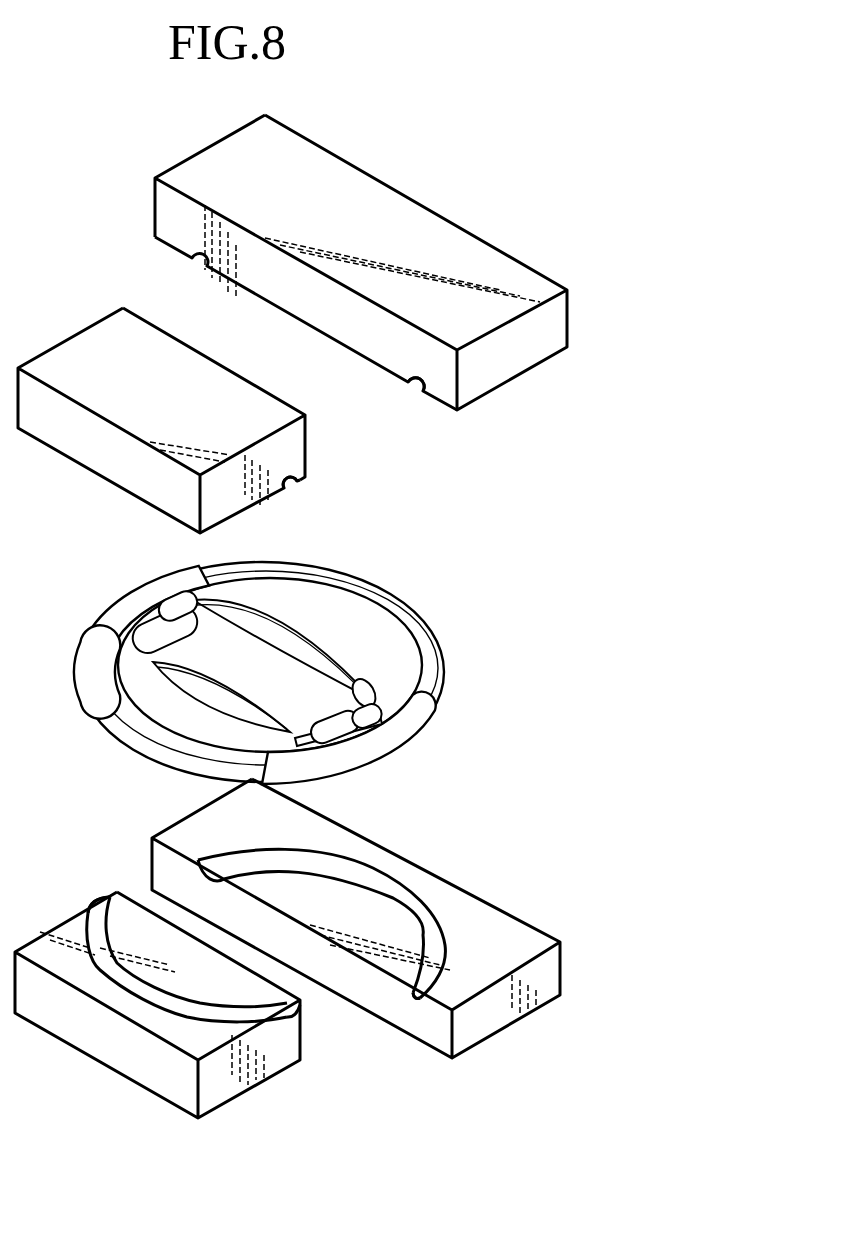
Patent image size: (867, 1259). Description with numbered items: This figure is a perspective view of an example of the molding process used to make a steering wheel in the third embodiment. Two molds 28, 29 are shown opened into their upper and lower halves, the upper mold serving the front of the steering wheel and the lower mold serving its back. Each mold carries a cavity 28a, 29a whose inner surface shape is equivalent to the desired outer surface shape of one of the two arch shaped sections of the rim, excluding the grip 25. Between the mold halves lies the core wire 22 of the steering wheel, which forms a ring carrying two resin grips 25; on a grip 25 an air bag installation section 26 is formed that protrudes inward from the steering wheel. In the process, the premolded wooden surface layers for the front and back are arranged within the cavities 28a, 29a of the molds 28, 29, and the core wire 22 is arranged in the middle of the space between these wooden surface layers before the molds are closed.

The core wire 22 is at (423, 610).
The grip 25 is at (410, 740).
The air bag installation section 26 is at (353, 677).
The mold 28 is at (82, 467).
The cavity 28a is at (293, 482).
The mold 29 is at (413, 197).
The cavity 29a is at (420, 392).